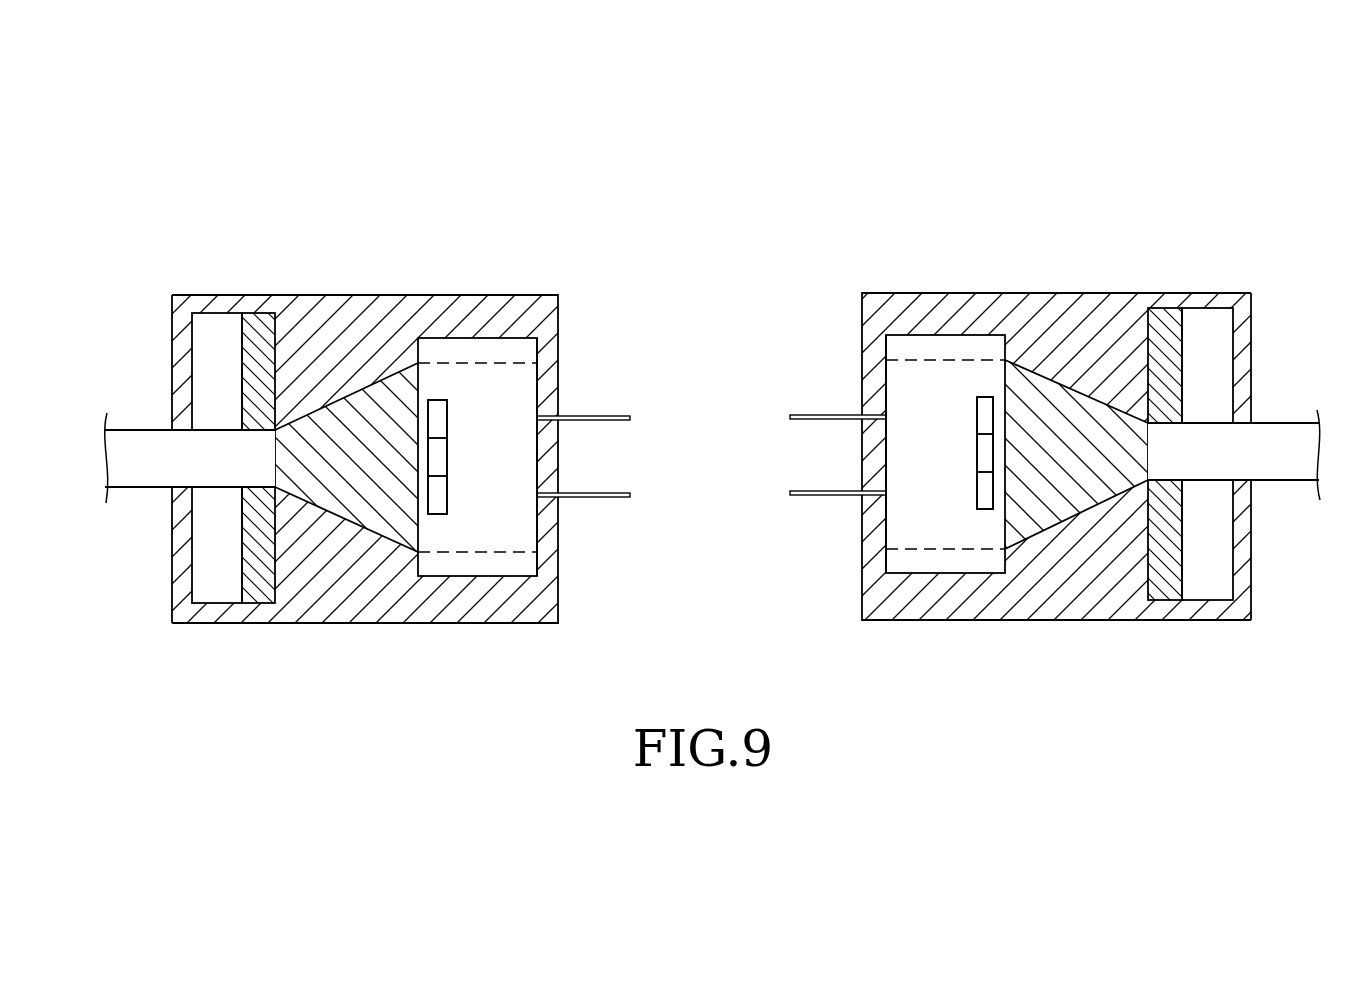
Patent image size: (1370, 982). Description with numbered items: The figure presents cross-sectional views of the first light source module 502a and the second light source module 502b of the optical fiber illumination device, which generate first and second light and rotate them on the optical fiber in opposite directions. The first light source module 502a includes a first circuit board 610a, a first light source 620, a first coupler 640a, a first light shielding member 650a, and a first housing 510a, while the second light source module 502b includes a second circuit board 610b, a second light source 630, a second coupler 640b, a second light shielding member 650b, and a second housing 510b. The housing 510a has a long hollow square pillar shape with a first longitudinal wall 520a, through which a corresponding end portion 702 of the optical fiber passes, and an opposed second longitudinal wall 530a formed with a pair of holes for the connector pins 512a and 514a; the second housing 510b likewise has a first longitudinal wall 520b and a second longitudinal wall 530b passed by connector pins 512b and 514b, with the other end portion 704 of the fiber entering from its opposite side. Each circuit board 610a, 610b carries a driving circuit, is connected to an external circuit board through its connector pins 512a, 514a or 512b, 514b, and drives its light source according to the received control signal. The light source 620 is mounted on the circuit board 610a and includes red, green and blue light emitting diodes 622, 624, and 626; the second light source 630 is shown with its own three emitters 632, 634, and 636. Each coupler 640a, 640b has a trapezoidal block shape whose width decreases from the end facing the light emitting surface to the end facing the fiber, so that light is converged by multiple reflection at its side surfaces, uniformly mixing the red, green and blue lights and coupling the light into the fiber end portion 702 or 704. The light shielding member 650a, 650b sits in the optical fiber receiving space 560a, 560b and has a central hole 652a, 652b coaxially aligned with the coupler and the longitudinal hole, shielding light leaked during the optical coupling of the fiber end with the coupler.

The first light source module 502a is at (410, 124).
The second light source module 502b is at (1045, 122).
The first housing 510a is at (342, 598).
The second housing 510b is at (1085, 597).
The connector pin 512a is at (597, 415).
The connector pin 512b is at (822, 414).
The connector pin 514a is at (597, 492).
The connector pin 514b is at (822, 490).
The first longitudinal wall 520a is at (182, 593).
The first longitudinal wall 520b is at (1243, 587).
The second longitudinal wall 530a is at (552, 532).
The second longitudinal wall 530b is at (870, 531).
The optical fiber receiving space 560a is at (217, 330).
The optical fiber receiving space 560b is at (1207, 325).
The first circuit board 610a is at (504, 376).
The second circuit board 610b is at (920, 373).
The first light source 620 is at (460, 388).
The red light emitting diode 622 is at (450, 418).
The green light emitting diode 624 is at (450, 457).
The blue light emitting diode 626 is at (450, 494).
The second light source 630 is at (959, 384).
The first photodiode 632 is at (975, 418).
The second photodiode 634 is at (975, 454).
The third photodiode 636 is at (975, 493).
The first coupler 640a is at (357, 425).
The second coupler 640b is at (1065, 423).
The first light shielding member 650a is at (260, 330).
The second light shielding member 650b is at (1163, 320).
The hole 652a is at (242, 418).
The hole 652b is at (1180, 415).
The end portion of the optical fiber 702 is at (140, 470).
The second optical fiber 704 is at (1286, 468).